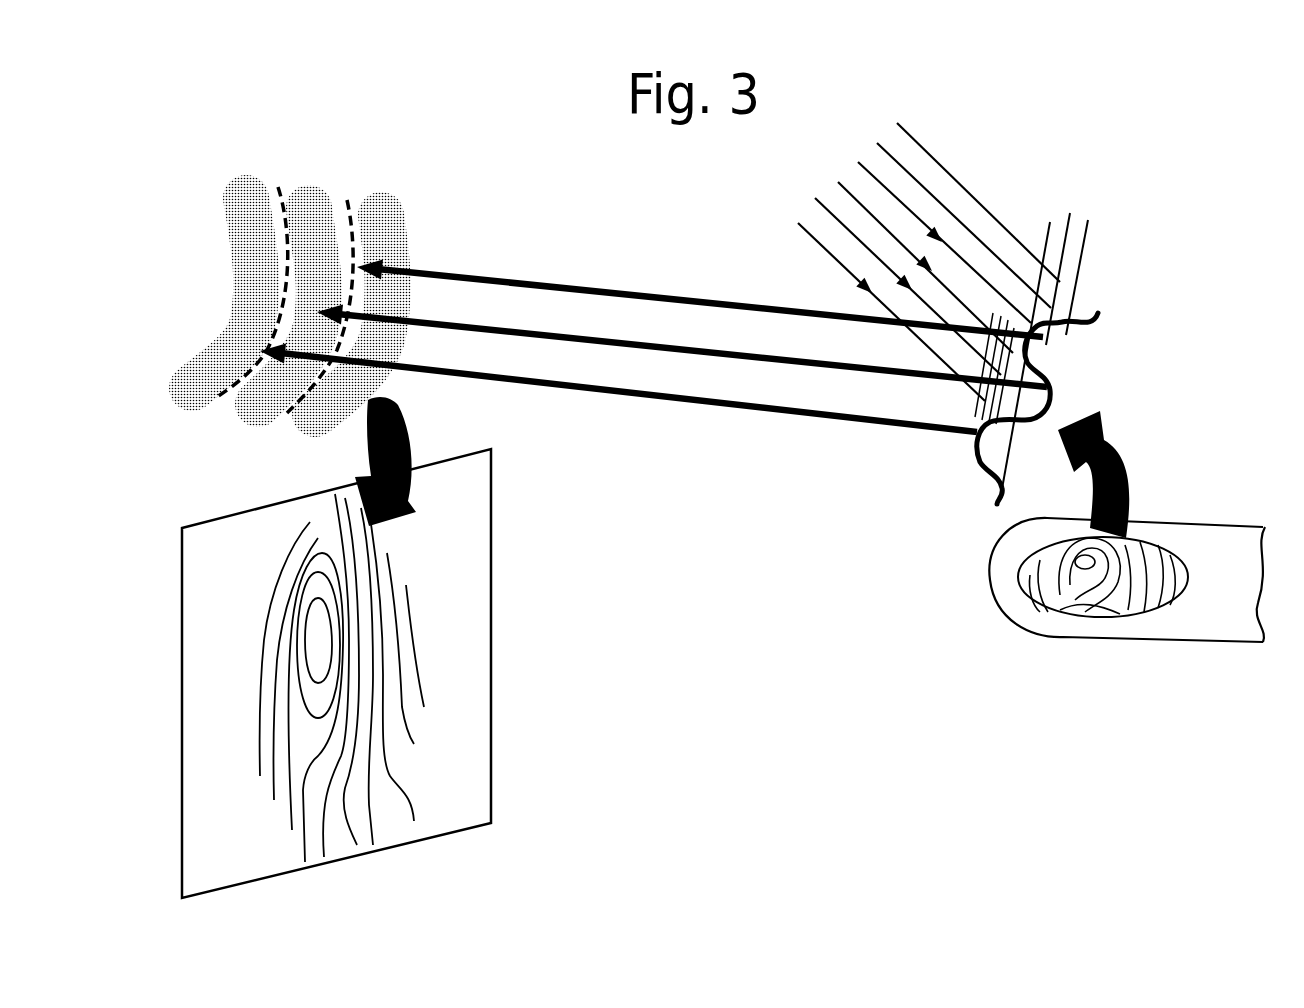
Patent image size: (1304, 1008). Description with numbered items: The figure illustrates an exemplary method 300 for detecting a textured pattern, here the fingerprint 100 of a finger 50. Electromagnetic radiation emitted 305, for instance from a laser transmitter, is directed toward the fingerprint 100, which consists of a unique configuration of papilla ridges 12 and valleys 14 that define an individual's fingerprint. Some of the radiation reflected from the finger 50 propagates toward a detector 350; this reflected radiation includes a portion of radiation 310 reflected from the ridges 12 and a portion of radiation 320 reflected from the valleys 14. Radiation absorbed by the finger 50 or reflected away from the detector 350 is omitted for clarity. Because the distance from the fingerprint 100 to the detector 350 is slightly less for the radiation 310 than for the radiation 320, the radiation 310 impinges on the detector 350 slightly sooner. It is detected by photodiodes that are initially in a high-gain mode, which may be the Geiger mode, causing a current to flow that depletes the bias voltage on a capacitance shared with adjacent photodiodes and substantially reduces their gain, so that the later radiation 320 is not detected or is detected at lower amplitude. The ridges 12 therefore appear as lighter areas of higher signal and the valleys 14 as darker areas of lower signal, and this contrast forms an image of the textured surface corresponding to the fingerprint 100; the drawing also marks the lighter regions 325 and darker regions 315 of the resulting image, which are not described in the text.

The method for detecting a textured pattern 300 is at (1146, 169).
The electromagnetic radiation emitted 305 is at (940, 165).
The papilla ridges 12 is at (1050, 222).
The valleys 14 is at (1055, 395).
The radiation reflected from ridges 310 is at (578, 286).
The radiation reflected from valleys 320 is at (751, 364).
The bright image regions 325 is at (372, 235).
The dark image regions 315 is at (318, 334).
The detector 350 is at (491, 532).
The fingerprint 100 is at (1168, 556).
The finger 50 is at (1063, 640).